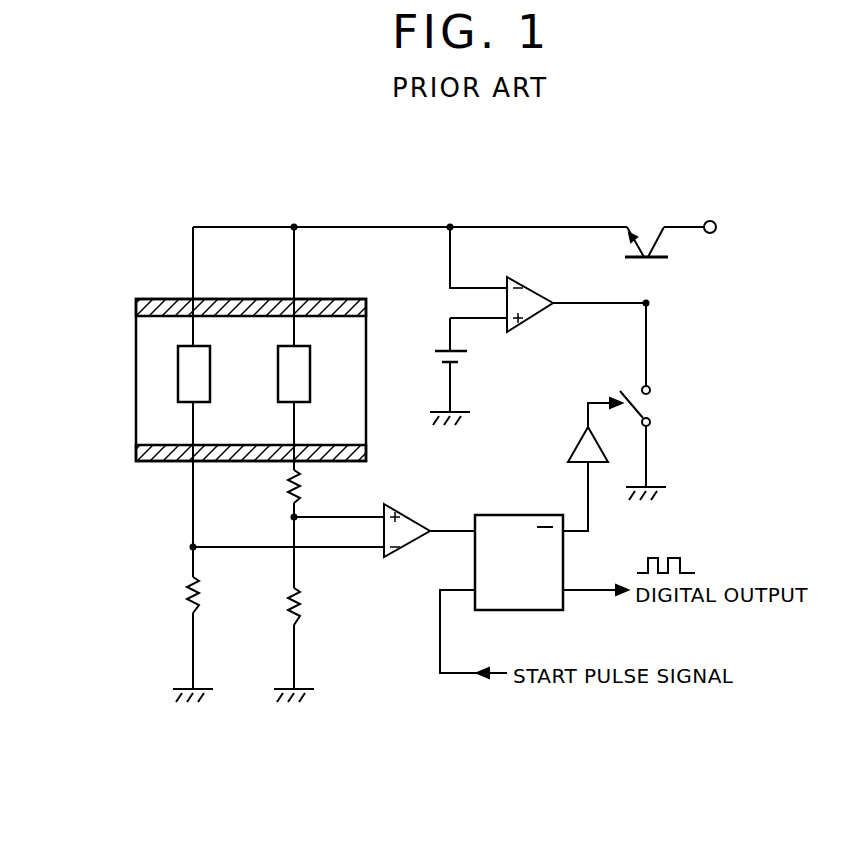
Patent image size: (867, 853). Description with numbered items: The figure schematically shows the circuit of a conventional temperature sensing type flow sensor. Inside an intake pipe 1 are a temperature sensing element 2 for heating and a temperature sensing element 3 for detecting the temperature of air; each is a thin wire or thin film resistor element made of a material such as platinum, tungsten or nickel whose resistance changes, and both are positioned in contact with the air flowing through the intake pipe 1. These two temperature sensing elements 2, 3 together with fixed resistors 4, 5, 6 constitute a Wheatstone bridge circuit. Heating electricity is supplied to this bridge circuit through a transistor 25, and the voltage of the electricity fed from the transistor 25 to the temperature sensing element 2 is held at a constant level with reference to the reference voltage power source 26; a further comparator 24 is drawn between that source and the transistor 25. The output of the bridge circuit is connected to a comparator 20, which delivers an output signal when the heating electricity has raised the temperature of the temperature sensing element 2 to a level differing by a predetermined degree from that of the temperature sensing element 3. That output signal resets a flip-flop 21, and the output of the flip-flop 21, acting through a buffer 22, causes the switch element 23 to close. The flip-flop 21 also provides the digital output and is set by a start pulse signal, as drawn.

The intake pipe 1 is at (138, 299).
The temperature sensing element for heating 2 is at (178, 378).
The temperature sensing element for detecting the temperature of air 3 is at (310, 378).
The fixed resistor 4 is at (300, 486).
The fixed resistor 5 is at (300, 606).
The fixed resistor 6 is at (187, 600).
The comparator 20 is at (410, 545).
The flip-flop 21 is at (516, 514).
The buffer 22 is at (578, 444).
The switch element 23 is at (655, 400).
The comparator 24 is at (529, 285).
The transistor 25 is at (651, 236).
The reference voltage power source 26 is at (464, 360).